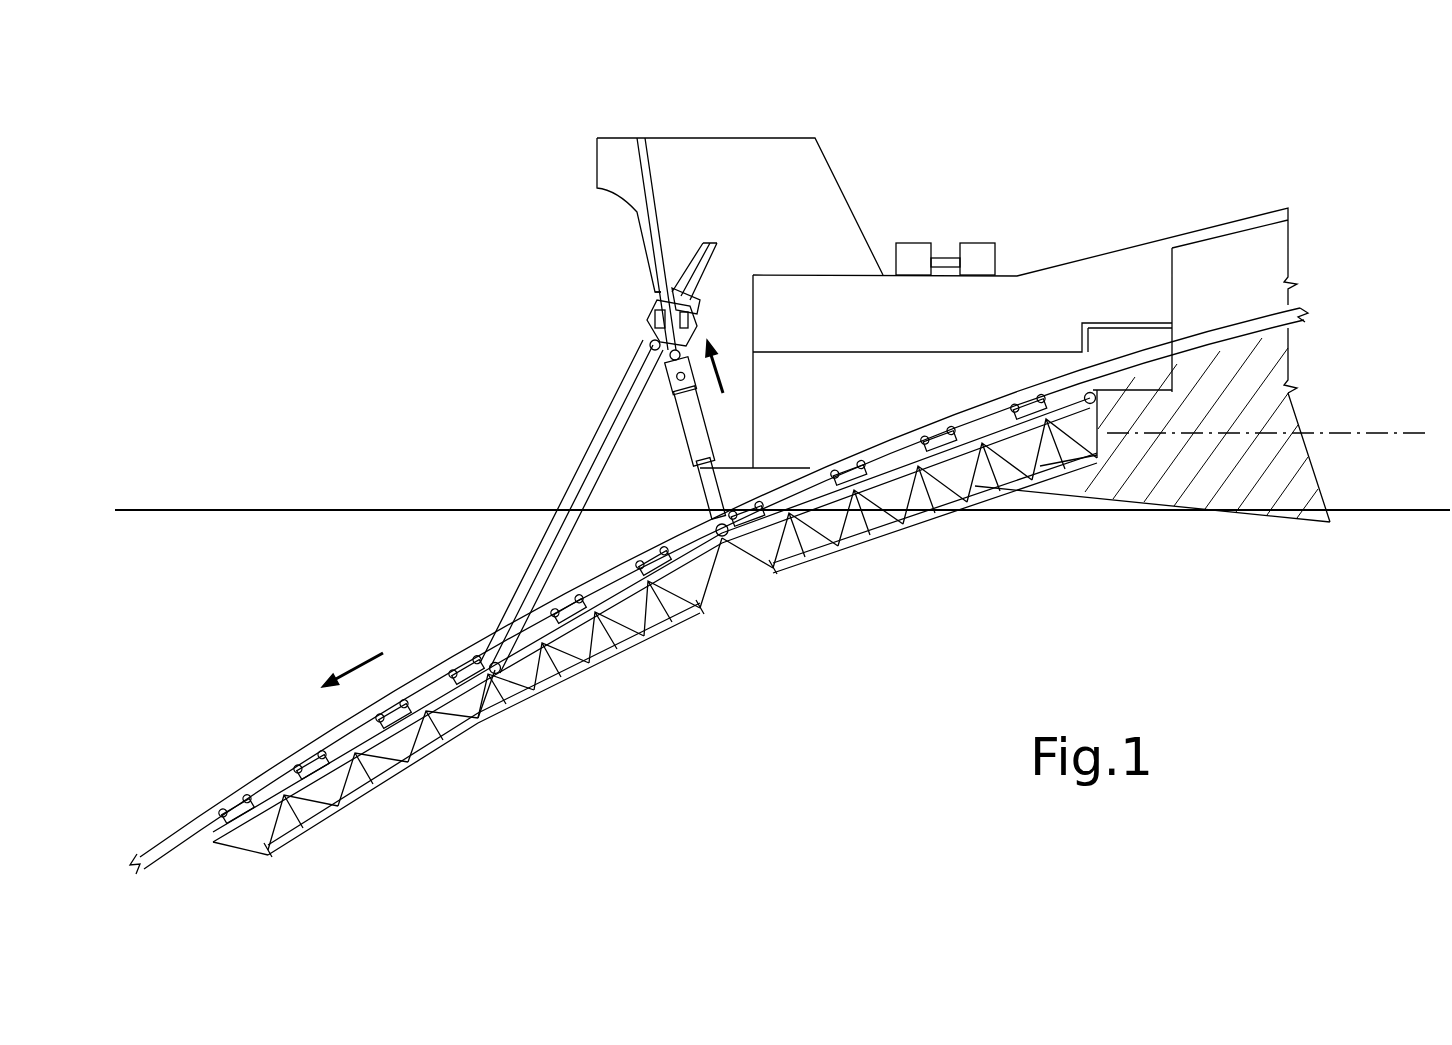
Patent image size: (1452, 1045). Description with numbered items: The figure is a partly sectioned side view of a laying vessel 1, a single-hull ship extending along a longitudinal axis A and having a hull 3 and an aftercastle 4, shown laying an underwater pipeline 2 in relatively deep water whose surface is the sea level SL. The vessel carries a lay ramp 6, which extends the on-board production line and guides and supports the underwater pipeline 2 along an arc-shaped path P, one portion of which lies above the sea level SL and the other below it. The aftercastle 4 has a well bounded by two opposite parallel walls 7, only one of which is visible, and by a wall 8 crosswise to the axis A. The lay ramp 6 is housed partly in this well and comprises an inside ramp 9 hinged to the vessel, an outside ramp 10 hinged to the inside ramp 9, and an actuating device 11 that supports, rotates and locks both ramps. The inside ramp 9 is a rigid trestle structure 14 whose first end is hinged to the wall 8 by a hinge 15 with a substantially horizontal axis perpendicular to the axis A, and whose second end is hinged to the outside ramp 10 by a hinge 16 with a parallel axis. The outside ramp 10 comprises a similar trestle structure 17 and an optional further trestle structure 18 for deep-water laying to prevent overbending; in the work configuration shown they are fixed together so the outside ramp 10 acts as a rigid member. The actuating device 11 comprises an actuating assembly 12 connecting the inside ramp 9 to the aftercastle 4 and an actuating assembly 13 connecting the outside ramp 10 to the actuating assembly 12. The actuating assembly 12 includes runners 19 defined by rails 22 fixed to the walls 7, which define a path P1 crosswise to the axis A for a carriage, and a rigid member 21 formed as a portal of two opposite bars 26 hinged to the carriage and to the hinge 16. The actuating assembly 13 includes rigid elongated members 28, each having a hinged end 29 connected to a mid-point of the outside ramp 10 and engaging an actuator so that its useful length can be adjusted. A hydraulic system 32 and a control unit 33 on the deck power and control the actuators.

The laying vessel 1 is at (1305, 168).
The underwater pipeline 2 is at (193, 822).
The hull 3 is at (1040, 484).
The aftercastle 4 is at (808, 190).
The lay ramp 6 is at (445, 300).
The walls 7 is at (750, 165).
The wall 8 is at (1040, 467).
The inside ramp 9 is at (880, 537).
The outside ramp 10 is at (481, 730).
The actuating device 11 is at (632, 320).
The actuating assembly 12 is at (699, 308).
The actuating assembly 13 is at (638, 356).
The trestle structure 14 is at (815, 551).
The hinge 15 is at (1097, 404).
The hinge 16 is at (722, 546).
The trestle structure 17 is at (622, 648).
The further trestle structure 18 is at (324, 817).
The runners 19 is at (653, 187).
The rigid member 21 is at (713, 455).
The rails 22 is at (636, 158).
The bars 26 is at (693, 418).
The rigid elongated members 28 is at (590, 452).
The hinged end 29 is at (500, 674).
The hydraulic system 32 is at (912, 243).
The control unit 33 is at (980, 243).
The longitudinal axis A is at (1370, 430).
The arc-shaped path P is at (352, 660).
The path P1 is at (718, 355).
The sea level SL is at (320, 508).